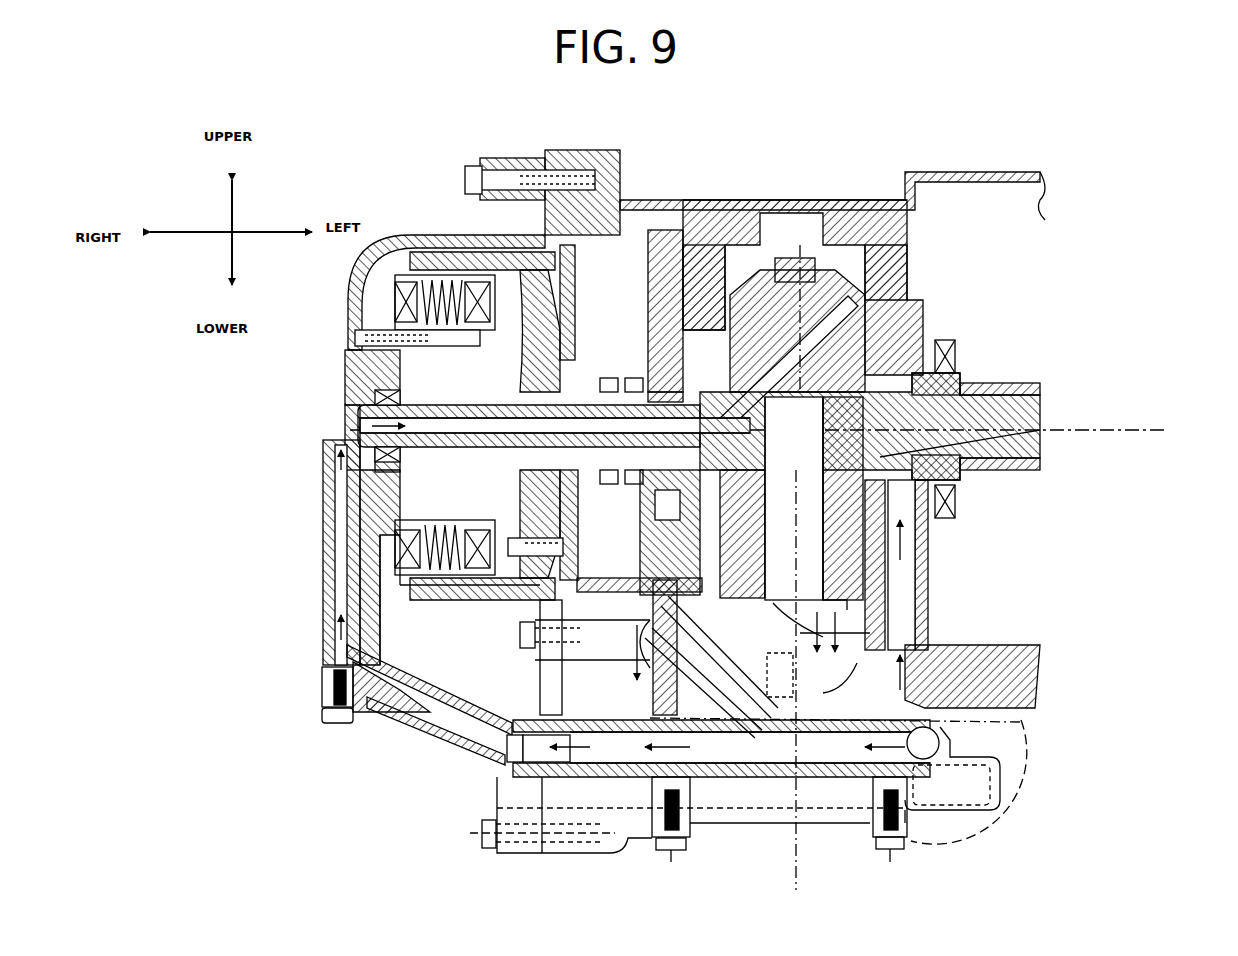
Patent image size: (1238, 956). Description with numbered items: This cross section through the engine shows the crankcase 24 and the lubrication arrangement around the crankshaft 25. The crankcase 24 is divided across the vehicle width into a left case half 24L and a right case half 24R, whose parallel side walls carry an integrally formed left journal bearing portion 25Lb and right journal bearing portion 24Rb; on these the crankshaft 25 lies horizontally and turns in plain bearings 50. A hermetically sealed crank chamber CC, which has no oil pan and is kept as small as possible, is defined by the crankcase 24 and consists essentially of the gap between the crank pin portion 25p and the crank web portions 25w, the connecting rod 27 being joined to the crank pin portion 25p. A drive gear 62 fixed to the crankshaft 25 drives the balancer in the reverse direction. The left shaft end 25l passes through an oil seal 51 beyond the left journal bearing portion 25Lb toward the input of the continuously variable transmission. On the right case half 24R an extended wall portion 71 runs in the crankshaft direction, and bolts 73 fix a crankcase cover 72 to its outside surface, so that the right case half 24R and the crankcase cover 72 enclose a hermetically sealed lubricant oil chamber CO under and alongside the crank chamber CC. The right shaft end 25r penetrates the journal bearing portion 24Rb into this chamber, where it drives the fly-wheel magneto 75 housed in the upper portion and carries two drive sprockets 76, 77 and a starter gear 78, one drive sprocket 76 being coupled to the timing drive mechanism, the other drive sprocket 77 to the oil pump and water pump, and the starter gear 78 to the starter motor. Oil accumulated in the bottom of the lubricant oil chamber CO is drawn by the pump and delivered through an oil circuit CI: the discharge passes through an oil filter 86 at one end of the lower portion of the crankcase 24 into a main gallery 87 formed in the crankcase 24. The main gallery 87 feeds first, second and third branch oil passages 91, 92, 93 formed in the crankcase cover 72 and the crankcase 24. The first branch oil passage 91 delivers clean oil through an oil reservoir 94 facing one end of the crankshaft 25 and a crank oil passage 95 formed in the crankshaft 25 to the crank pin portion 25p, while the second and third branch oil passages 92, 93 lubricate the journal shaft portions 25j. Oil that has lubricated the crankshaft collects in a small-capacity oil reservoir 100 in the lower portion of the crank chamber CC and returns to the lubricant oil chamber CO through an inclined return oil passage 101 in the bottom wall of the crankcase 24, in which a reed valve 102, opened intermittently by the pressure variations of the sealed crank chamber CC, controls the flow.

The crankcase 24 is at (870, 152).
The right case half 24R is at (725, 215).
The left case half 24L is at (860, 215).
The right journal bearing portion 24Rb is at (727, 522).
The crankshaft 25 is at (1020, 385).
The crank pin portion 25p is at (905, 304).
The journal shaft portions 25j is at (958, 378).
The left shaft end 25l is at (1010, 470).
The crank web portions 25w is at (817, 522).
The left journal bearing portion 25Lb is at (905, 548).
The right shaft end 25r is at (479, 535).
The connecting rod 27 is at (815, 262).
The plain bearings 50 is at (937, 345).
The oil seal 51 is at (942, 502).
The drive gear 62 is at (690, 282).
The extended wall portion 71 is at (640, 200).
The crankcase cover 72 is at (402, 237).
The bolts 73 is at (472, 180).
The fly-wheel magneto 75 is at (385, 300).
The drive sprocket 76 is at (612, 478).
The drive sprocket 77 is at (640, 560).
The starter gear 78 is at (570, 258).
The oil filter 86 is at (1023, 767).
The main gallery 87 is at (740, 780).
The first branch oil passage 91 is at (330, 560).
The second branch oil passage 92 is at (653, 688).
The third branch oil passage 93 is at (910, 612).
The oil reservoir 94 is at (352, 380).
The crank oil passage 95 is at (358, 424).
The oil reservoir 100 is at (905, 690).
The return oil passage 101 is at (770, 612).
The reed valve 102 is at (815, 790).
The crank chamber CC is at (1060, 430).
The oil circuit CI is at (580, 777).
The lubricant oil chamber CO is at (480, 660).